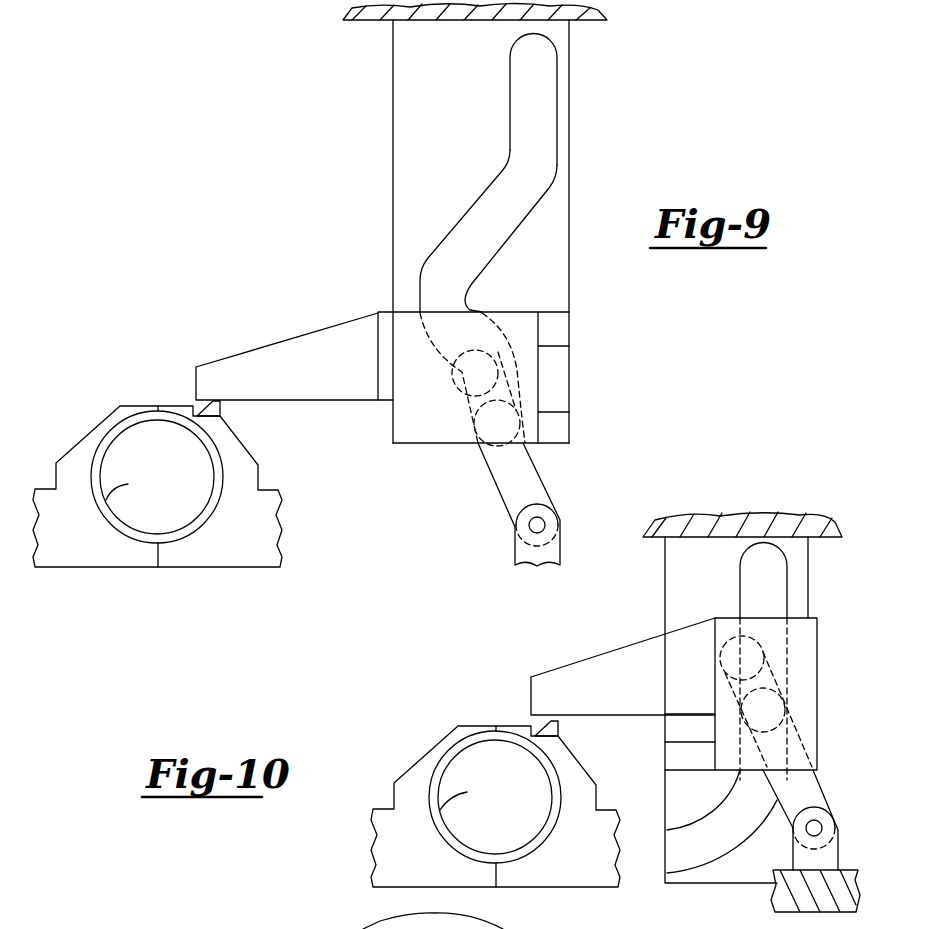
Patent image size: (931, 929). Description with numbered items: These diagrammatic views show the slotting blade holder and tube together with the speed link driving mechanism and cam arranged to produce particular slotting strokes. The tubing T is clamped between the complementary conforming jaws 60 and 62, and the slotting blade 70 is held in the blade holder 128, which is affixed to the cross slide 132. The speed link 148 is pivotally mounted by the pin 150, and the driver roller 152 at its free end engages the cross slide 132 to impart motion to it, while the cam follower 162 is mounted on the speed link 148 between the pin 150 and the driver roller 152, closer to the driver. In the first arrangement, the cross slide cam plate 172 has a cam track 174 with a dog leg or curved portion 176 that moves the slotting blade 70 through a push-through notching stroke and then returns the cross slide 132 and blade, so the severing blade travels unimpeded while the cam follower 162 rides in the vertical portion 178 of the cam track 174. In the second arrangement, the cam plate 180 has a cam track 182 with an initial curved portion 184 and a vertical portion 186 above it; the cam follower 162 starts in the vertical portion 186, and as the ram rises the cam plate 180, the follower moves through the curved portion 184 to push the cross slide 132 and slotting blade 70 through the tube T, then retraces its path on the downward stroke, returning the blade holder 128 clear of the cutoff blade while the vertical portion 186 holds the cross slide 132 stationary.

In FIG. 9, the jaw 60 is at (90, 427).
In FIG. 10, the jaw 60 is at (427, 743).
In FIG. 9, the jaw 62 is at (250, 453).
In FIG. 10, the jaw 62 is at (583, 760).
In FIG. 9, the slotting blade 70 is at (223, 410).
In FIG. 10, the slotting blade 70 is at (562, 725).
In FIG. 9, the blade holder 128 is at (297, 330).
In FIG. 10, the blade holder 128 is at (603, 647).
In FIG. 9, the cross slide 132 is at (483, 307).
In FIG. 10, the cross slide 132 is at (817, 617).
In FIG. 9, the speed link 148 is at (497, 483).
In FIG. 10, the speed link 148 is at (820, 782).
In FIG. 9, the pin 150 is at (547, 523).
In FIG. 10, the pin 150 is at (822, 826).
In FIG. 9, the driver roller 152 is at (545, 333).
In FIG. 10, the driver roller 152 is at (763, 653).
In FIG. 9, the cam follower 162 is at (517, 411).
In FIG. 10, the cam follower 162 is at (787, 710).
In FIG. 9, the cross slide cam plate 172 is at (572, 58).
In FIG. 9, the cam track 174 is at (560, 95).
In FIG. 9, the dog leg portion 176 is at (418, 283).
In FIG. 9, the vertical portion 178 is at (535, 130).
In FIG. 10, the cam plate 180 is at (808, 555).
In FIG. 10, the cam track 182 is at (788, 583).
In FIG. 10, the curved portion 184 is at (717, 837).
In FIG. 10, the vertical portion 186 is at (740, 577).
In FIG. 9, the tubing T is at (127, 486).
In FIG. 10, the tubing T is at (462, 794).